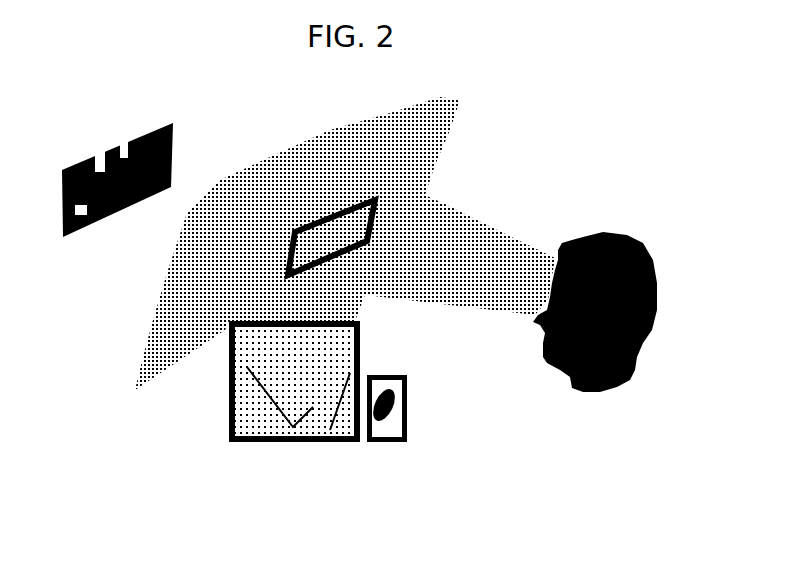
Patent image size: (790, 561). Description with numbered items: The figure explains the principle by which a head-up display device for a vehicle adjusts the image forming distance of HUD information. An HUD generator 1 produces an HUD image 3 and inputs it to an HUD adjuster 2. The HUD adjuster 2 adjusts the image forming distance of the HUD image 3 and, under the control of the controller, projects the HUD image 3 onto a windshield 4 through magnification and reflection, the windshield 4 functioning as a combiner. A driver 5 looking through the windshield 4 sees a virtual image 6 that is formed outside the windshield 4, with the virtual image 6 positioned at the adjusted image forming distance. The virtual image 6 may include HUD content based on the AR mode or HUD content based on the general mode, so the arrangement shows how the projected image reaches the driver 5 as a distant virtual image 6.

The HUD generator 1 is at (380, 443).
The HUD adjuster 2 is at (282, 443).
The HUD image 3 is at (375, 200).
The windshield 4 is at (447, 130).
The driver 5 is at (568, 392).
The virtual image 6 is at (173, 153).